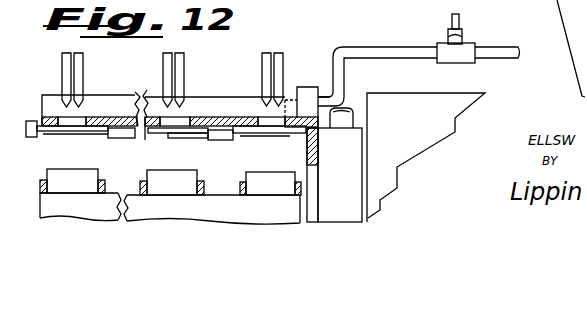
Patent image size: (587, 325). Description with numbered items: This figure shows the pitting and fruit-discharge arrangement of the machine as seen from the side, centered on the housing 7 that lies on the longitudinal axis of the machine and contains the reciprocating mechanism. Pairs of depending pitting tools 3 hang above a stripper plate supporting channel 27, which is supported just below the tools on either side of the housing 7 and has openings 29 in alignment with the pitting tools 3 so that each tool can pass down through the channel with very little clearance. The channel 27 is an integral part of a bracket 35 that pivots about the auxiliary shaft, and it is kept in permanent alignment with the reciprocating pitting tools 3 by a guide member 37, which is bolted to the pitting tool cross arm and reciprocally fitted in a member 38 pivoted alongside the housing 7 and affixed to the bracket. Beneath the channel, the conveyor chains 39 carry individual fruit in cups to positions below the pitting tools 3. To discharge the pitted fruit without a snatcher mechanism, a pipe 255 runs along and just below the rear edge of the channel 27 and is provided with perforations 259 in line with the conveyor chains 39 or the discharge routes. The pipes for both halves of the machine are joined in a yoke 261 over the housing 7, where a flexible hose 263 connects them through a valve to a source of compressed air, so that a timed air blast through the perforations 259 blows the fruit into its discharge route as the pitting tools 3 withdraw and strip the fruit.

The pitting tool 3 is at (84, 61).
The housing 7 is at (398, 110).
The stripper plate supporting channel 27 is at (113, 98).
The opening 29 is at (67, 116).
The bracket 35 is at (318, 173).
The guide member 37 is at (347, 107).
The member 38 is at (347, 153).
The conveyor chain 39 is at (38, 188).
The pipe 255 is at (244, 137).
The perforation 259 is at (73, 134).
The yoke 261 is at (358, 50).
The flexible hose 263 is at (463, 22).